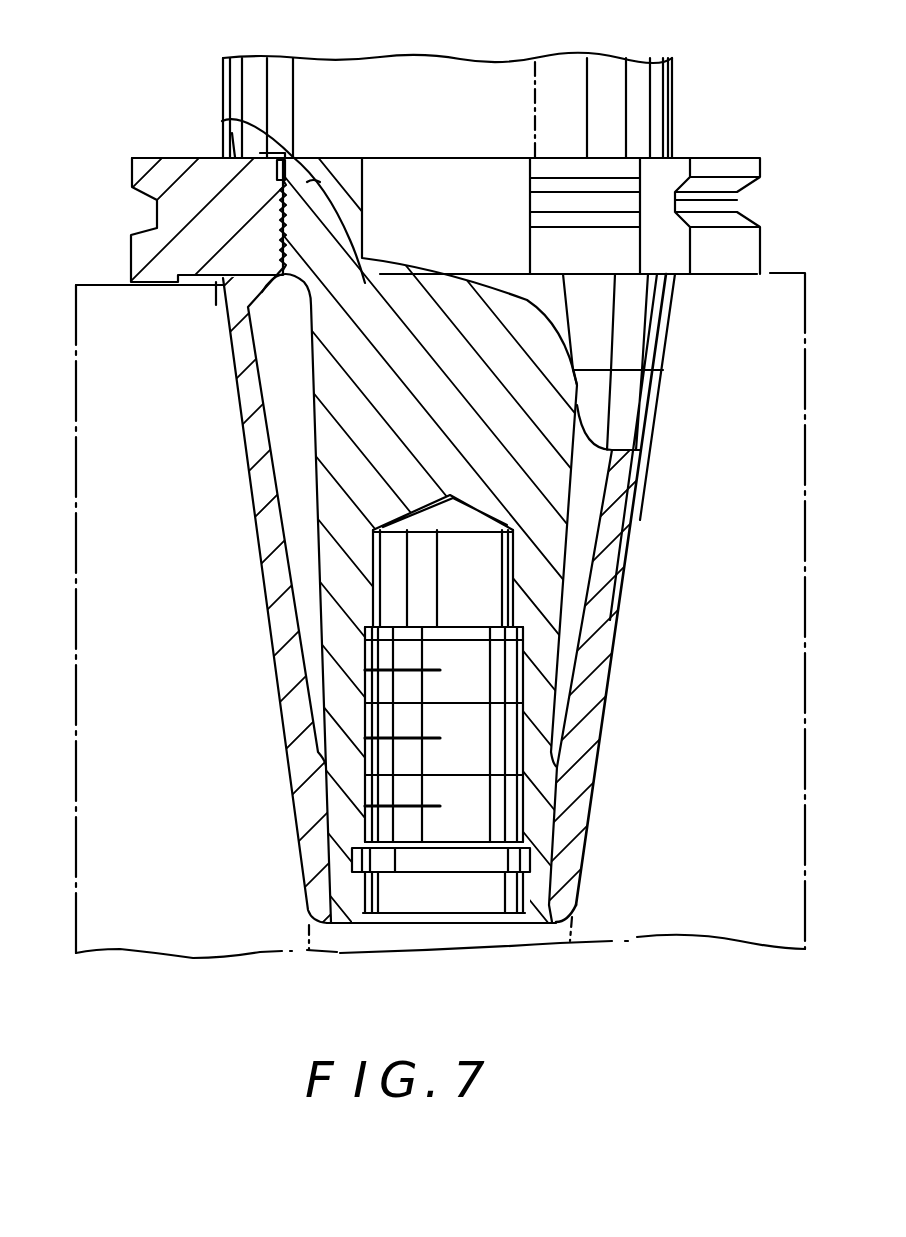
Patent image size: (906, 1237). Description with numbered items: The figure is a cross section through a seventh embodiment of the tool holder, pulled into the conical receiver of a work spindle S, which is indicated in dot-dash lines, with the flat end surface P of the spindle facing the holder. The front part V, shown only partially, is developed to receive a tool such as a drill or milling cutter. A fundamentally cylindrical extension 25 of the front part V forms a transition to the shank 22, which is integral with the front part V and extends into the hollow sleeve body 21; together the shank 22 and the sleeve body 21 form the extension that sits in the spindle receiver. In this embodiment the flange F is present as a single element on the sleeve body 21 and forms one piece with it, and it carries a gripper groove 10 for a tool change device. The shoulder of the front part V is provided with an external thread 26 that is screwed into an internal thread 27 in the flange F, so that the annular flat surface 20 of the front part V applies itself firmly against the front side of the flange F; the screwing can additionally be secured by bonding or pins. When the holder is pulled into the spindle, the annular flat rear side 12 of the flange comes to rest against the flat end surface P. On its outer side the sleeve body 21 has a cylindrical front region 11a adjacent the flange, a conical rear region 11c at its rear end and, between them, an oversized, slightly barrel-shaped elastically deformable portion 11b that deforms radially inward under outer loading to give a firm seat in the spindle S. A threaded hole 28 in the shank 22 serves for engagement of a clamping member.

The gripper groove 10 is at (737, 200).
The front region 11a is at (667, 322).
The elastically deformable portion 11b is at (663, 372).
The rear region 11c is at (587, 833).
The annular flat rear side 12 is at (143, 292).
The annular flat surface 20 is at (222, 121).
The sleeve body 21 is at (267, 552).
The shank 22 is at (337, 368).
The extension 25 is at (307, 182).
The external thread 26 is at (363, 160).
The internal thread 27 is at (312, 213).
The threaded hole 28 is at (468, 828).
The flange F is at (157, 180).
The flat end surface P is at (100, 277).
The work spindle S is at (120, 692).
The front part V is at (612, 80).